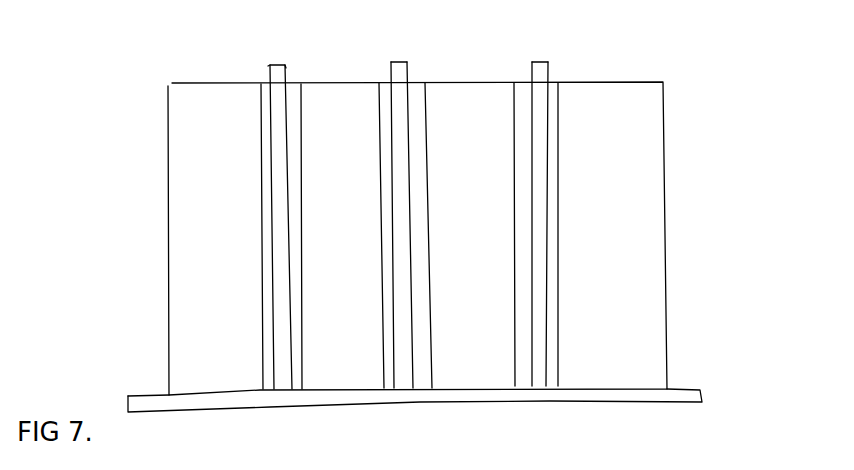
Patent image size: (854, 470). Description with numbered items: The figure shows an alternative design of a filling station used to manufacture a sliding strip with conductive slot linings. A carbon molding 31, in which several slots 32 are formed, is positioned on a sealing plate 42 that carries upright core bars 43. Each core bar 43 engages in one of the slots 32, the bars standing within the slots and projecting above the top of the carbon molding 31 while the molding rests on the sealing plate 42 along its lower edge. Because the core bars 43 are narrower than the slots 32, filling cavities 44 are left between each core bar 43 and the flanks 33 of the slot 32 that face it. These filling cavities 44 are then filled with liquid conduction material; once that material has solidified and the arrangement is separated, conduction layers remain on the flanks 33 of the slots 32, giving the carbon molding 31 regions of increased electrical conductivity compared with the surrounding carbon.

The carbon molding 31 is at (644, 247).
The slots 32 is at (525, 199).
The flanks 33 is at (555, 123).
The sealing plate 42 is at (683, 402).
The core bars 43 is at (550, 71).
The filling cavities 44 is at (552, 210).